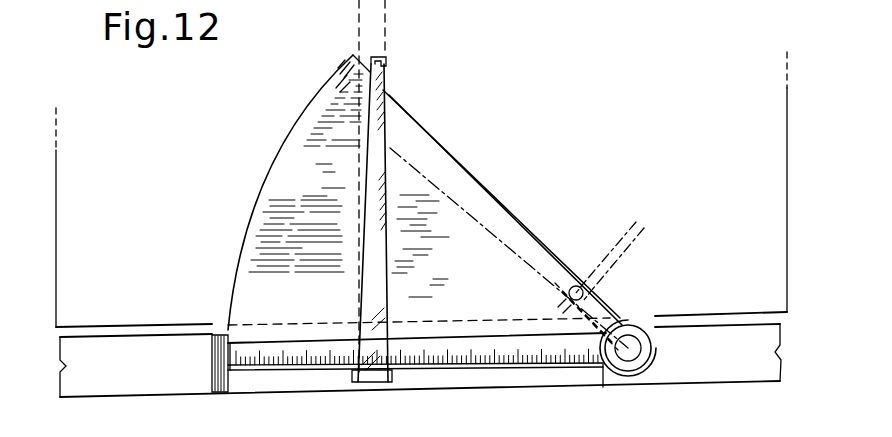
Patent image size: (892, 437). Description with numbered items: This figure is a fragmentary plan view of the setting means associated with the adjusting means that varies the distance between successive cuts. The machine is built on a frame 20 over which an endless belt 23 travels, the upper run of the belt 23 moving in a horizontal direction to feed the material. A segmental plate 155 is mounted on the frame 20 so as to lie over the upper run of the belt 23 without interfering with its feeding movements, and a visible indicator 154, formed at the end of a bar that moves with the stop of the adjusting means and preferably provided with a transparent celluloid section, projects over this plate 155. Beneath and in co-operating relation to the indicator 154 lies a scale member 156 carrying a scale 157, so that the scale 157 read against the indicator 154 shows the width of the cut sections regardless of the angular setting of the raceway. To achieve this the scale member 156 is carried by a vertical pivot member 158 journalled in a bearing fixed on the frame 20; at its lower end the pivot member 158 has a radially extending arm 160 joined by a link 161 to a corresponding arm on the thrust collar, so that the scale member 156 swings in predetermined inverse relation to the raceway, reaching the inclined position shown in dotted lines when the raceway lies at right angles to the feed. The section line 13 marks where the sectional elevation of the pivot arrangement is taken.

The section line 13— 13 is at (218, 215).
The frame 20 is at (700, 372).
The endless belt 23 is at (421, 189).
The indicator 154 is at (377, 193).
The segmental plate 155 is at (234, 290).
The scale member 156 is at (466, 204).
The scale 157 is at (330, 367).
The vertical pivot member 158 is at (628, 347).
The arm 160 is at (600, 310).
The link 161 is at (623, 235).